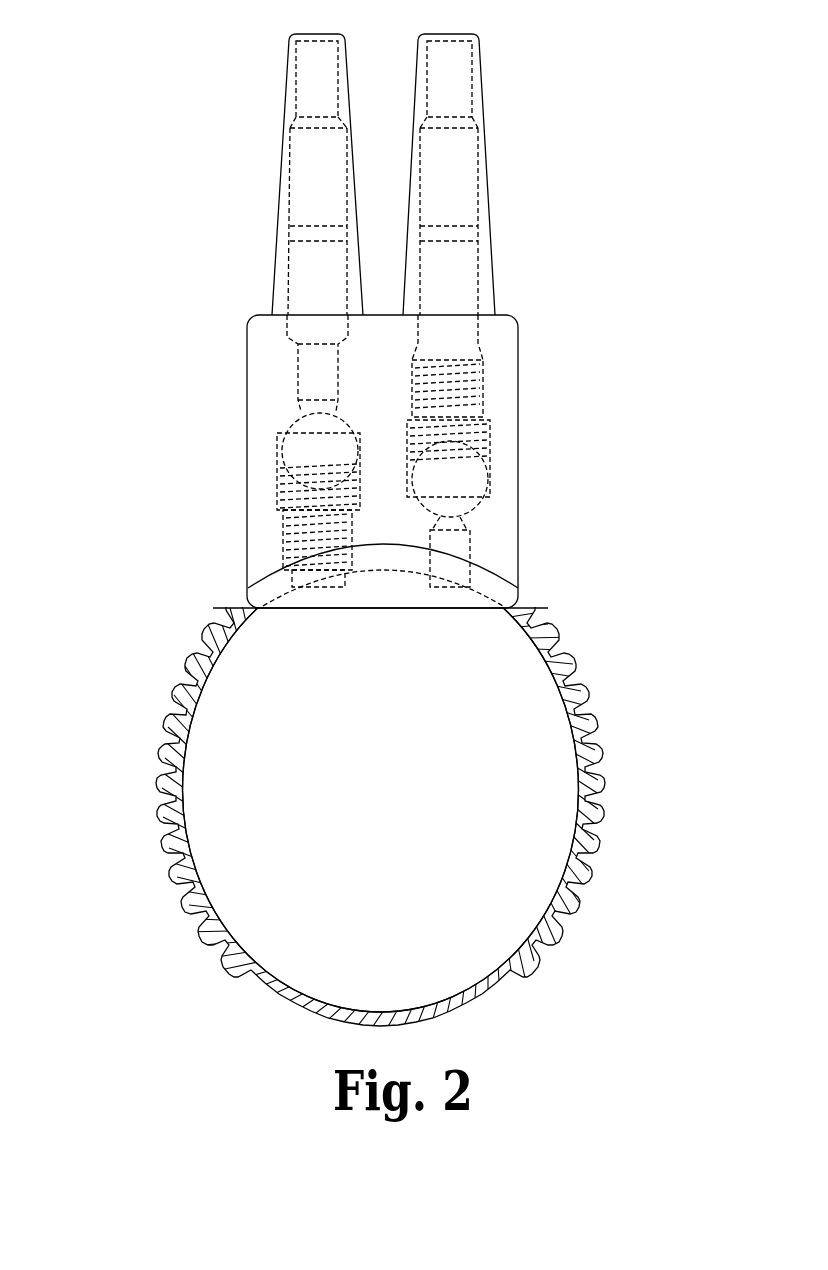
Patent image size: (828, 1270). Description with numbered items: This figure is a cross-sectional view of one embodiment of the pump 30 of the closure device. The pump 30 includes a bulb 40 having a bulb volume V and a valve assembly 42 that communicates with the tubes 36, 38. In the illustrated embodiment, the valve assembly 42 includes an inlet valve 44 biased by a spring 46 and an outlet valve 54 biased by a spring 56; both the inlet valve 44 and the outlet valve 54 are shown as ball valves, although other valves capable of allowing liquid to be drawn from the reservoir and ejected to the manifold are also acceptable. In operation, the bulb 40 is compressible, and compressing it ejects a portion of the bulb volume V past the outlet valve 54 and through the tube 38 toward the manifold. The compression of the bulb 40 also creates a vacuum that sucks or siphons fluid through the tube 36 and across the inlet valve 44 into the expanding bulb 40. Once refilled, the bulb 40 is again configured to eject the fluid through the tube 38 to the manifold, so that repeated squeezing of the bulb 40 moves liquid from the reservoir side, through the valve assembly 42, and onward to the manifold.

The pump 30 is at (636, 298).
The tube 36 is at (292, 63).
The tube 38 is at (490, 141).
The bulb 40 is at (598, 781).
The valve assembly 42 is at (262, 370).
The inlet valve 44 is at (300, 447).
The spring 46 is at (293, 518).
The outlet valve 54 is at (452, 485).
The spring 56 is at (457, 394).
The bulb volume V is at (510, 867).